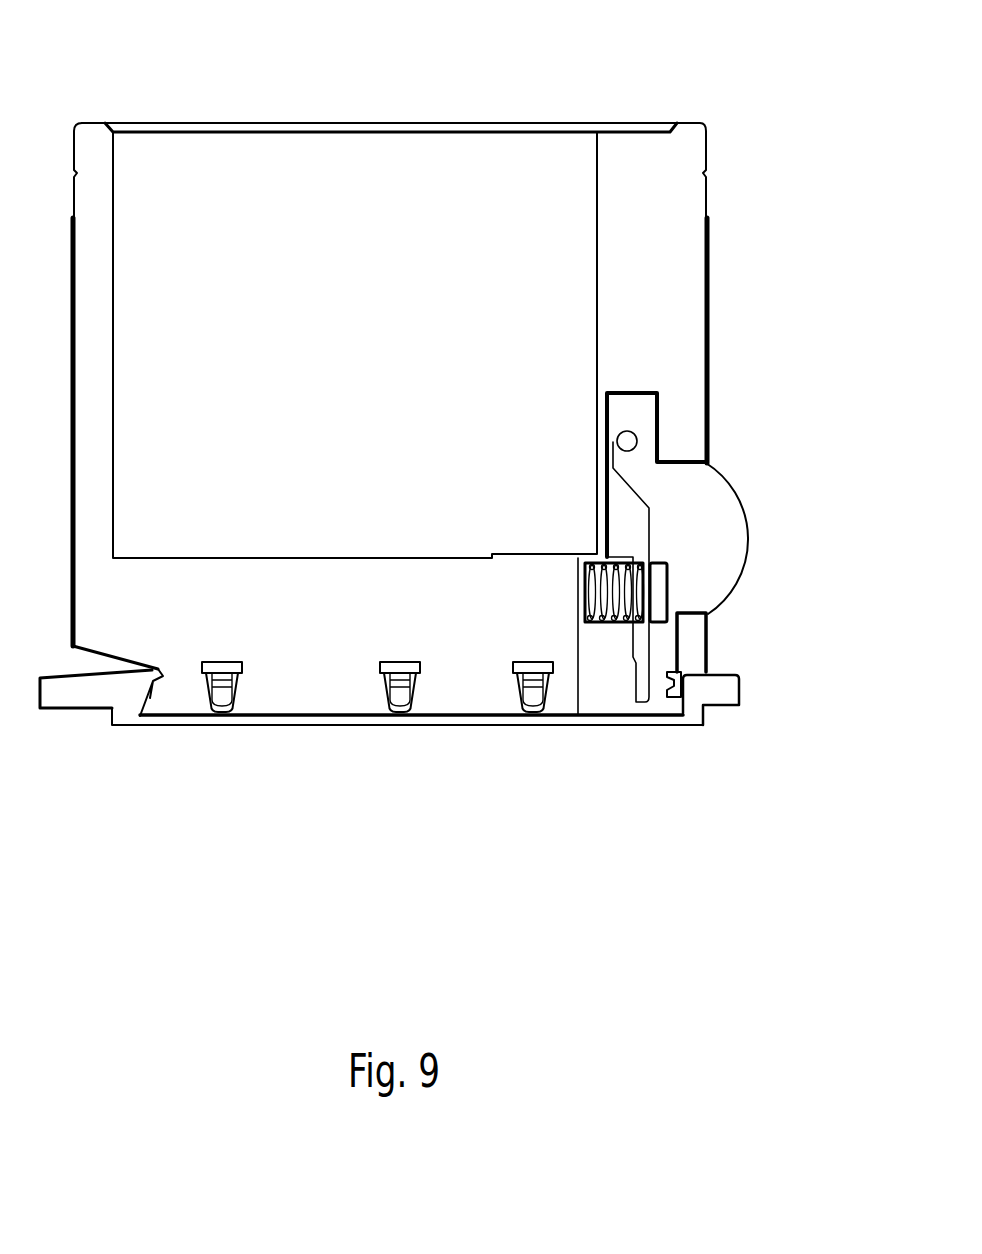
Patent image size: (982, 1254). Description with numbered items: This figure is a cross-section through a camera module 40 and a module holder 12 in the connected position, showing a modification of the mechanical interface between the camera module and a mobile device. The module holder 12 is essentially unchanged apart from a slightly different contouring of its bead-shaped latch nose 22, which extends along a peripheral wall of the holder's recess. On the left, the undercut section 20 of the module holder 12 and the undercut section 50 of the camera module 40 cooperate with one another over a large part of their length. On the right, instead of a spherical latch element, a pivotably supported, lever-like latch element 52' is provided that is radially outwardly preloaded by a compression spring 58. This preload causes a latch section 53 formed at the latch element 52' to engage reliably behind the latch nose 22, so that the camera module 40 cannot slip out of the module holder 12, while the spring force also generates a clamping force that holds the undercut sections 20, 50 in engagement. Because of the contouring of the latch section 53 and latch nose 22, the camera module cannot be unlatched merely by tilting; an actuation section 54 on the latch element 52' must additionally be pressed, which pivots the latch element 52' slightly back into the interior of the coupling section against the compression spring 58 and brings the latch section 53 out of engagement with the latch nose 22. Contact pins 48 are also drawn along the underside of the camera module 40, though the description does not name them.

The camera module 40 is at (325, 212).
The lever-like latch element 52' is at (712, 522).
The actuation section 54 is at (720, 522).
The compression spring 58 is at (605, 622).
The latch section 53 is at (668, 698).
The module holder 12 is at (688, 710).
The bead-shaped latch nose 22 is at (690, 683).
The undercut section 20 is at (132, 687).
The undercut section 50 is at (145, 698).
The contact pins 48 is at (527, 697).